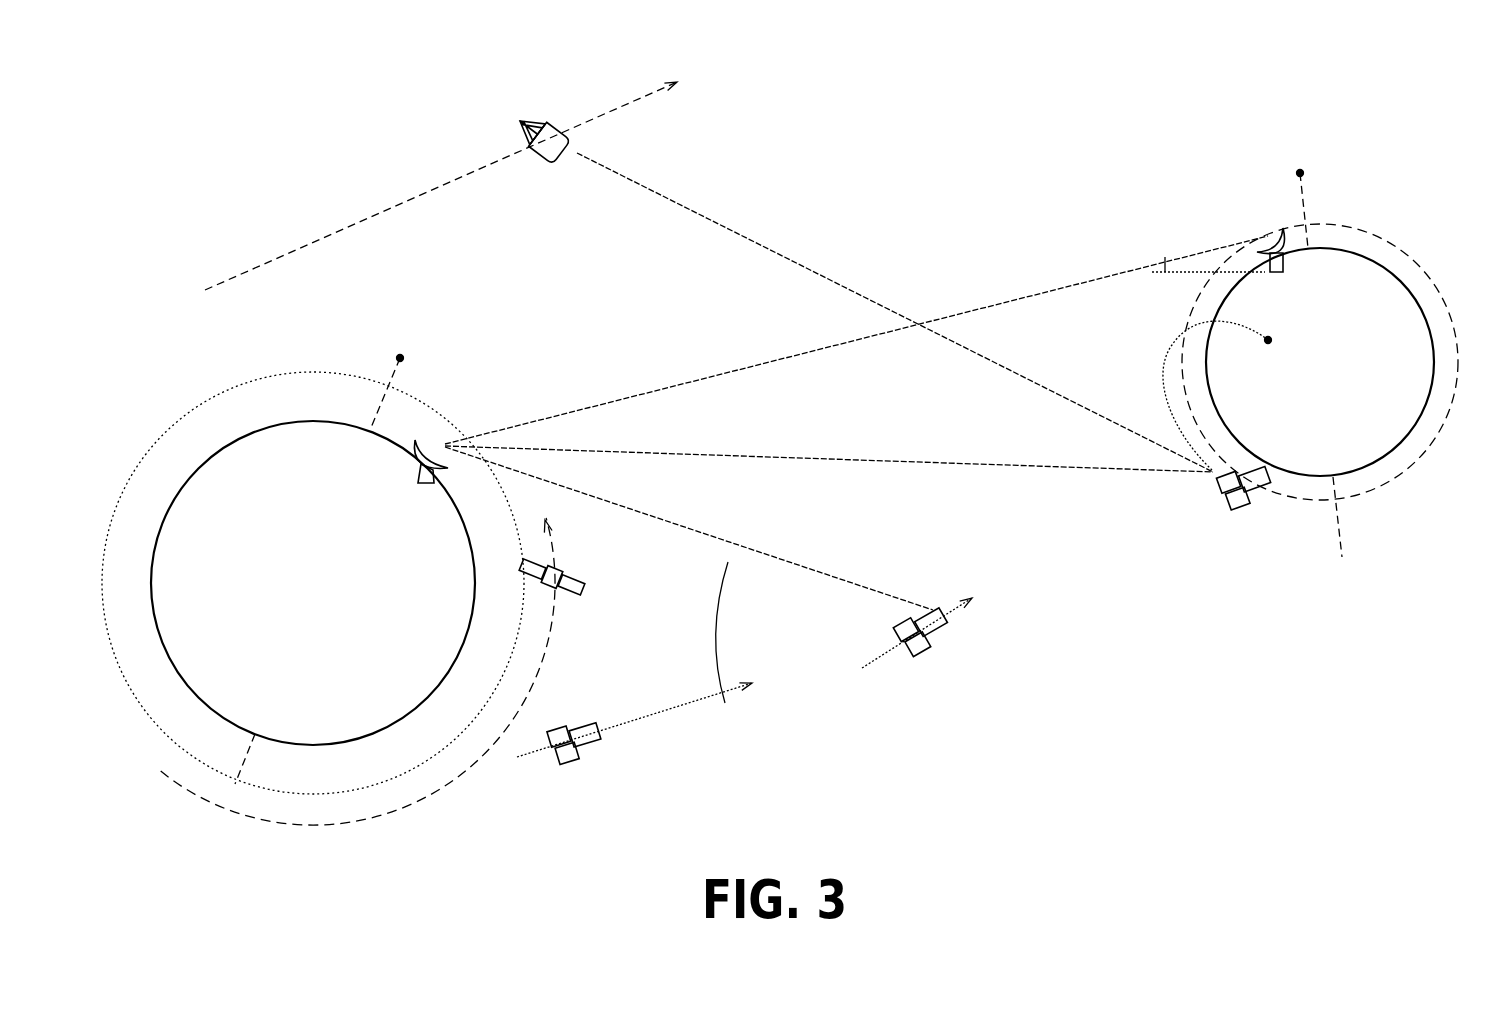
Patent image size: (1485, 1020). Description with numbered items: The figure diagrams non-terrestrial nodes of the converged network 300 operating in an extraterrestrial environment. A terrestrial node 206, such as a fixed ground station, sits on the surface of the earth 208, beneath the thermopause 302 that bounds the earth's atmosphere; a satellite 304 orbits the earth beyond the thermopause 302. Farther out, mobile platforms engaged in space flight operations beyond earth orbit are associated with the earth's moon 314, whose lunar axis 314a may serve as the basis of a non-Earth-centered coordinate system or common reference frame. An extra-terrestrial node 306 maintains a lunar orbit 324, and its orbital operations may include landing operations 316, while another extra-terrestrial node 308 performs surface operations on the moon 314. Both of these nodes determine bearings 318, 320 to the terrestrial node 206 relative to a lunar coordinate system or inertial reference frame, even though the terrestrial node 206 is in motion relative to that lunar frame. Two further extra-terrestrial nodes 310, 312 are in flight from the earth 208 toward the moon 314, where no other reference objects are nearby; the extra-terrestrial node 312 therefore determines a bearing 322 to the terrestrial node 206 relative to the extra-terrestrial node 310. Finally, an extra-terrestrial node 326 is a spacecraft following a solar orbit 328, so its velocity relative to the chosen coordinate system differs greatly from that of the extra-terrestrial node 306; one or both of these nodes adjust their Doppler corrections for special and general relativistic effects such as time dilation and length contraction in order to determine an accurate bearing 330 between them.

The converged network 300 is at (210, 58).
The terrestrial node 206 is at (428, 447).
The earth 208 is at (336, 604).
The thermopause 302 is at (173, 740).
The satellite 304 is at (587, 588).
The extra-terrestrial node 306 is at (1247, 503).
The extra-terrestrial node 308 is at (1277, 232).
The extra-terrestrial node 310 is at (572, 732).
The extra-terrestrial node 312 is at (933, 637).
The moon 314 is at (1346, 389).
The lunar axis 314a is at (1307, 210).
The landing operations 316 is at (1170, 338).
The bearing 318 is at (645, 453).
The bearing 320 is at (598, 403).
The bearing 322 is at (805, 567).
The lunar orbit 324 is at (1393, 478).
The extra-terrestrial node 326 is at (545, 160).
The solar orbit 328 is at (360, 222).
The bearing 330 is at (757, 243).